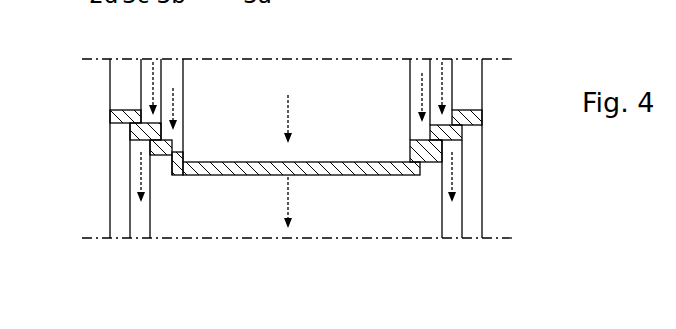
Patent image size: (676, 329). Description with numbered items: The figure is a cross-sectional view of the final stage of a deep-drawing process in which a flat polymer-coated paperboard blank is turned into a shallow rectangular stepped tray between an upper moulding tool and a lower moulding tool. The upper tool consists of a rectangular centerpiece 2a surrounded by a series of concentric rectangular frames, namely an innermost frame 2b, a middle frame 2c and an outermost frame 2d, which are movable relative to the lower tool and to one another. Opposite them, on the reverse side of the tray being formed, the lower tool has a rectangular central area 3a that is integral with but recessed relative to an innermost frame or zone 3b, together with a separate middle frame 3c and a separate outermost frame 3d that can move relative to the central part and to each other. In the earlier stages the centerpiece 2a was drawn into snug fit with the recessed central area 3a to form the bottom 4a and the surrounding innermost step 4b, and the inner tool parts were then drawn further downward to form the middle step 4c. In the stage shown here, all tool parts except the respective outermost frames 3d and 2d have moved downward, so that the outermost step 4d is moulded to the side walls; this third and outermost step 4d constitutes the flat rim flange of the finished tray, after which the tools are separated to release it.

The centerpiece 2a is at (343, 97).
The innermost frame 2b is at (418, 76).
The middle frame 2c is at (442, 64).
The outermost frame 2d is at (465, 73).
The central area 3a is at (335, 175).
The innermost frame 3b is at (431, 150).
The middle frame 3c is at (450, 217).
The outermost frame 3d is at (472, 217).
The bottom 4a is at (226, 160).
The innermost step 4b is at (175, 87).
The middle step 4c is at (462, 136).
The outermost step 4d is at (466, 108).